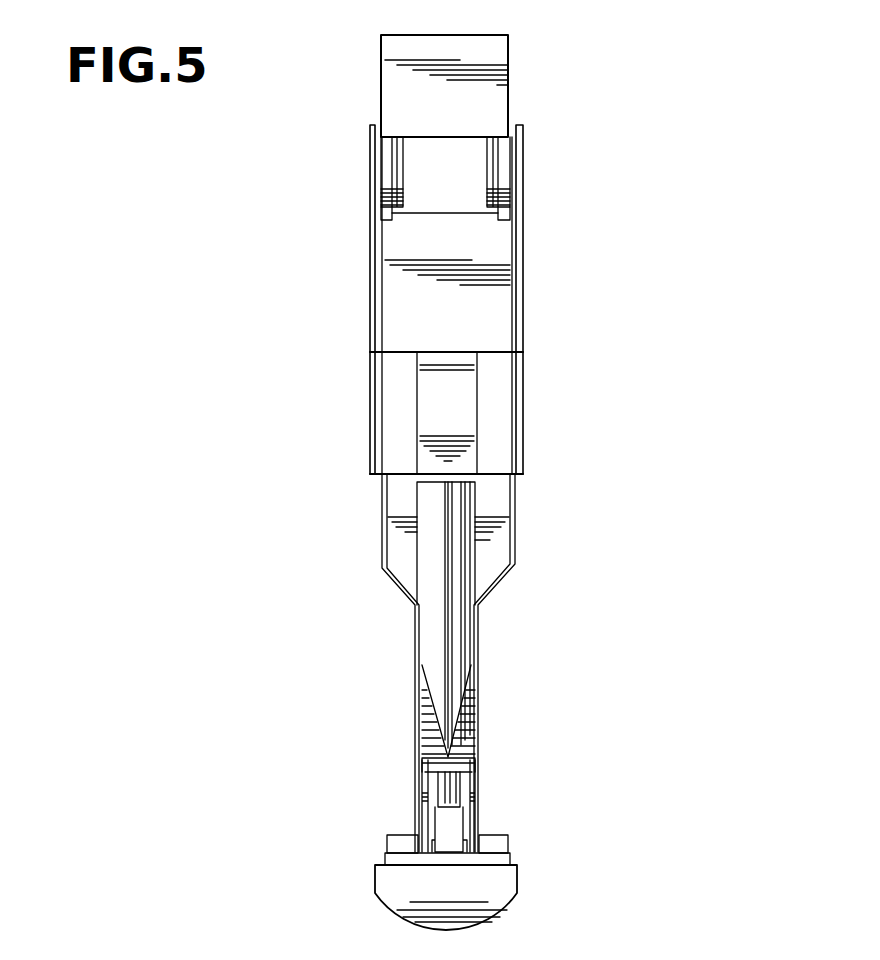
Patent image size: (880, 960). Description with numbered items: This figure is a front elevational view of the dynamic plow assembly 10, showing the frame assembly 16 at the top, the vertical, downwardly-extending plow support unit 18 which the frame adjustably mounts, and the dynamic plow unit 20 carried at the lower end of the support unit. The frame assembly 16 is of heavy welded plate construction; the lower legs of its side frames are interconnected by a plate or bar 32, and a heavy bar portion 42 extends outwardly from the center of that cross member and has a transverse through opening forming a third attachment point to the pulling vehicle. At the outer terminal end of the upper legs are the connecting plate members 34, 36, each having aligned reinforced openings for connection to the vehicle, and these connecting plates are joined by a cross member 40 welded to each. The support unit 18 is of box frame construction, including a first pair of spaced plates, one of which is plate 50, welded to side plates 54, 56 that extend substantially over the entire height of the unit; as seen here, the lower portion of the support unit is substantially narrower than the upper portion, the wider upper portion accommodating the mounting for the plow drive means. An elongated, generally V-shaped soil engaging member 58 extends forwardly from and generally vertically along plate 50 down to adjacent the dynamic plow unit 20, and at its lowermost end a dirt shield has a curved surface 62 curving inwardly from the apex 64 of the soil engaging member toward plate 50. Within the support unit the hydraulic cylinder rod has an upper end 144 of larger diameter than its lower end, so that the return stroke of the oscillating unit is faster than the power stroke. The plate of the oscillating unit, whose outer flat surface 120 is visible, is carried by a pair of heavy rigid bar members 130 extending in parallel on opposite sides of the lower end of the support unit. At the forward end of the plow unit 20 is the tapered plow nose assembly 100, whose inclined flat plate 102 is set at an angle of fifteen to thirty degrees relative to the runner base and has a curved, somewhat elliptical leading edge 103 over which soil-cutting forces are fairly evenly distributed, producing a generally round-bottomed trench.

The dynamic plow assembly 10 is at (517, 54).
The frame assembly 16 is at (531, 165).
The plate or bar 32 is at (498, 352).
The connecting plate member 34 is at (510, 213).
The connecting plate member 36 is at (380, 218).
The cross member 40 is at (470, 200).
The heavy bar portion 42 is at (468, 418).
The spaced plate 50 is at (500, 533).
The side plate 54 is at (478, 620).
The side plate 56 is at (417, 625).
The plow support unit 18 is at (524, 637).
The soil engaging member 58 is at (465, 658).
The apex 64 is at (445, 668).
The curved surface 62 is at (478, 765).
The upper end of the cylinder rod 144 is at (458, 795).
The bar members 130 is at (398, 840).
The outer flat surface 120 is at (497, 861).
The dynamic plow unit 20 is at (573, 835).
The plow nose assembly 100 is at (556, 894).
The inclined flat plate 102 is at (403, 895).
The leading edge 103 is at (492, 917).